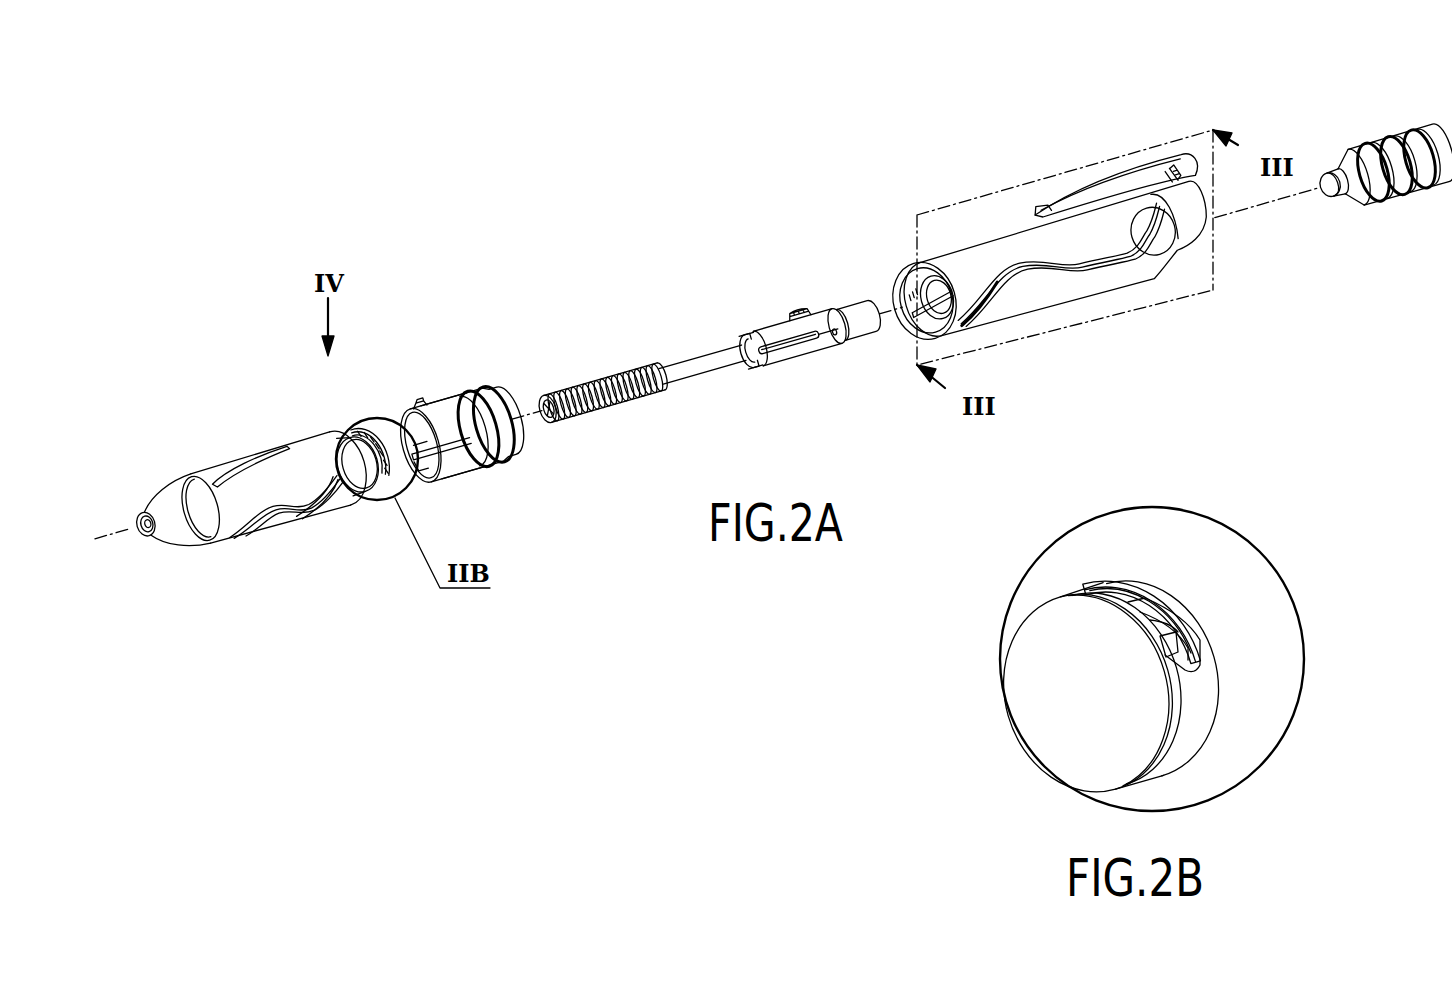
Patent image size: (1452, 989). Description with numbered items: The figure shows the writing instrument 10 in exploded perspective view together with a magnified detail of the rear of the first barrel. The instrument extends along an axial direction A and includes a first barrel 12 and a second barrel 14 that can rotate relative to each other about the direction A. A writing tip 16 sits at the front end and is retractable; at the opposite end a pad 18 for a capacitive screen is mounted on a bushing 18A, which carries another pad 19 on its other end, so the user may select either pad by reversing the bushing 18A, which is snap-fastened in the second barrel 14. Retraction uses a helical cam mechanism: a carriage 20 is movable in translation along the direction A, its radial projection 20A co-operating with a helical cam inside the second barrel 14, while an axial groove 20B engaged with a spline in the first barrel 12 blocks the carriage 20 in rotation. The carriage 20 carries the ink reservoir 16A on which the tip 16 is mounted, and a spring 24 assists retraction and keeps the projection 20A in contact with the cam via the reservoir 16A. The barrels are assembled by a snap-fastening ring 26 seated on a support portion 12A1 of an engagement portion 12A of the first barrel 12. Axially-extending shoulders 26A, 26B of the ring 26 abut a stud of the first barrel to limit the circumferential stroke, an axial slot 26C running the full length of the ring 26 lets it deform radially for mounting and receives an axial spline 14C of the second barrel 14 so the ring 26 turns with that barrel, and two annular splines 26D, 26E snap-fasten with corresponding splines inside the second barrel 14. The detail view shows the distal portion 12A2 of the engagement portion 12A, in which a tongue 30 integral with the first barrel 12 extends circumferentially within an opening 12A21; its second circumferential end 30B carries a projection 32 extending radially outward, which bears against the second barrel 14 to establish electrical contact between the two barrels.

In FIG. 2A, the writing instrument 10 is at (610, 504).
In FIG. 2A, the first barrel 12 is at (238, 468).
In FIG. 2A, the engagement portion 12A is at (323, 508).
In FIG. 2A, the support portion 12A1 is at (345, 455).
In FIG. 2B, the support portion 12A1 is at (1047, 730).
In FIG. 2A, the distal portion 12A2 is at (380, 495).
In FIG. 2B, the distal portion 12A2 is at (1198, 718).
In FIG. 2B, the opening 12A21 is at (1193, 647).
In FIG. 2A, the second barrel 14 is at (965, 254).
In FIG. 2A, the axial spline 14C is at (908, 300).
In FIG. 2A, the writing tip 16 is at (543, 398).
In FIG. 2A, the ink reservoir 16A is at (707, 368).
In FIG. 2A, the pad 18 is at (1433, 128).
In FIG. 2A, the bushing 18A is at (1408, 190).
In FIG. 2A, the pad 19 is at (1326, 182).
In FIG. 2A, the carriage 20 is at (826, 312).
In FIG. 2A, the radial projection 20A is at (800, 310).
In FIG. 2A, the axial groove 20B is at (787, 352).
In FIG. 2A, the spring 24 is at (592, 380).
In FIG. 2A, the snap-fastening ring 26 is at (457, 400).
In FIG. 2A, the axially-extending shoulder 26A is at (460, 480).
In FIG. 2A, the axially-extending shoulder 26B is at (424, 414).
In FIG. 2A, the axial slot 26C is at (412, 482).
In FIG. 2A, the annular spline 26D is at (490, 462).
In FIG. 2A, the annular spline 26E is at (503, 438).
In FIG. 2A, the tongue 30 is at (382, 440).
In FIG. 2B, the tongue 30 is at (1127, 590).
In FIG. 2B, the second circumferential end 30B is at (1175, 642).
In FIG. 2B, the projection 32 is at (1173, 600).
In FIG. 2A, the axial direction A is at (108, 542).